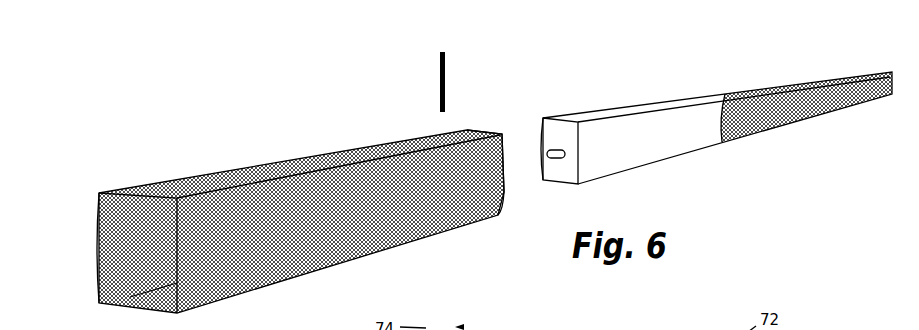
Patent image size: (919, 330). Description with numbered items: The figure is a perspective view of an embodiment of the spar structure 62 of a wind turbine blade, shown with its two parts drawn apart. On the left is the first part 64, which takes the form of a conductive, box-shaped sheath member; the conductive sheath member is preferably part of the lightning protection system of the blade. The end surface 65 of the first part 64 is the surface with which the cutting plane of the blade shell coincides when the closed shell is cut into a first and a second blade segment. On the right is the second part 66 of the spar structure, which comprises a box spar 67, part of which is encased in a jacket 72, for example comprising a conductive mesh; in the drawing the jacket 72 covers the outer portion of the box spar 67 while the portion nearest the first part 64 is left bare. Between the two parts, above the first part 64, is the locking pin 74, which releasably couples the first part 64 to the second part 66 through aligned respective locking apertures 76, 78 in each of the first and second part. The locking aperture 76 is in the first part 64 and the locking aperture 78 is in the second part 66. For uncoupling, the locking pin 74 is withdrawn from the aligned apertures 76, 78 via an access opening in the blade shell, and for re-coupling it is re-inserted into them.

The spar structure 62 is at (331, 96).
The first part 64 is at (220, 180).
The end surface 65 is at (505, 198).
The second part 66 is at (775, 187).
The box spar 67 is at (636, 120).
The jacket 72 is at (802, 100).
The locking pin 74 is at (437, 87).
The locking aperture 76 is at (444, 140).
The locking aperture 78 is at (692, 101).